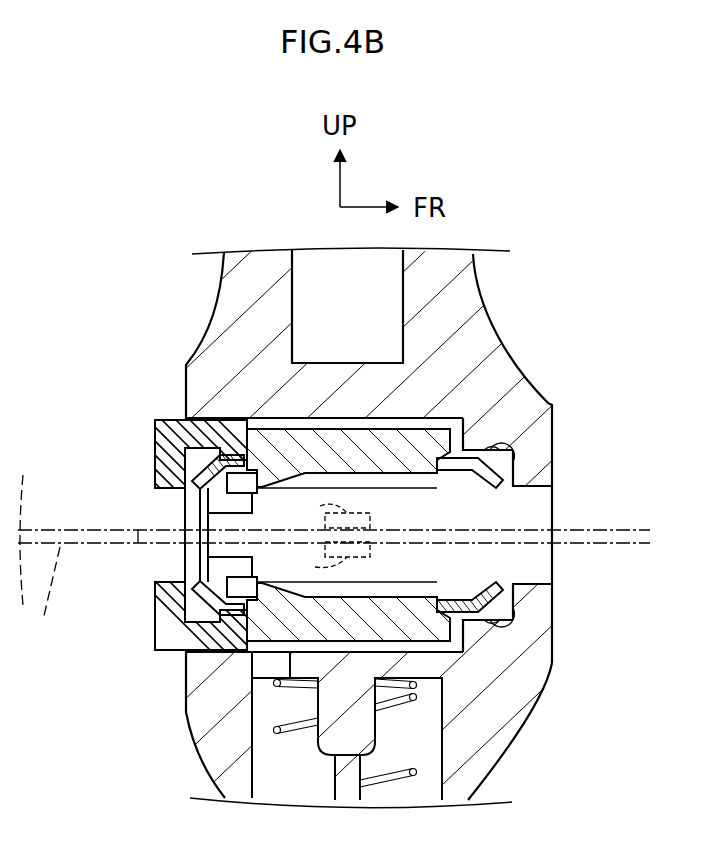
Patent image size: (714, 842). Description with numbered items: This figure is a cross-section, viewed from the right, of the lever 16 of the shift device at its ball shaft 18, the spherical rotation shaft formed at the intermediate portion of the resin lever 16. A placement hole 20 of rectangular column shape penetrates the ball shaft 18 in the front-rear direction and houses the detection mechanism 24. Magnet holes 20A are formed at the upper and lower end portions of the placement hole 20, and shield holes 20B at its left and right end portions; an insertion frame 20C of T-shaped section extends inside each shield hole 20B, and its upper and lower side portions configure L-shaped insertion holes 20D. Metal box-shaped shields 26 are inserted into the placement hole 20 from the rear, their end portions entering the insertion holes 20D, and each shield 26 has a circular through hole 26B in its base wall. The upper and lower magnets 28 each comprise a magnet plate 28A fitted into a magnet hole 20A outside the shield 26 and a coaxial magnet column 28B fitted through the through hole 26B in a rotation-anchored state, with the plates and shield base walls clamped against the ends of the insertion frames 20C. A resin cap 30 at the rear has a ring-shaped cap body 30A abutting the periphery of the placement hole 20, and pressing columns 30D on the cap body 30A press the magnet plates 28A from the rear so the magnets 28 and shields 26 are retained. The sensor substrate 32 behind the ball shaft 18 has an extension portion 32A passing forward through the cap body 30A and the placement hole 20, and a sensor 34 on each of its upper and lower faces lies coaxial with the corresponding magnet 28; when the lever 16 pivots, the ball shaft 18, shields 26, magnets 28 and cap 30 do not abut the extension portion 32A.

The lever 16 is at (212, 316).
The ball shaft 18 is at (540, 405).
The placement hole 20 is at (555, 518).
The magnet hole 20A is at (410, 418).
The shield hole 20B is at (512, 468).
The insertion frame 20C is at (462, 562).
The insertion hole 20D is at (508, 450).
The detection mechanism 24 is at (143, 441).
The shield 26 is at (202, 474).
The through hole 26B is at (440, 470).
The magnet 28 is at (272, 429).
The magnet plate 28A is at (432, 428).
The magnet column 28B is at (222, 489).
The cap 30 is at (152, 436).
The cap body 30A is at (175, 640).
The pressing column 30D is at (195, 423).
The sensor substrate 32 is at (41, 562).
The extension portion 32A is at (640, 530).
The sensor 34 is at (328, 538).